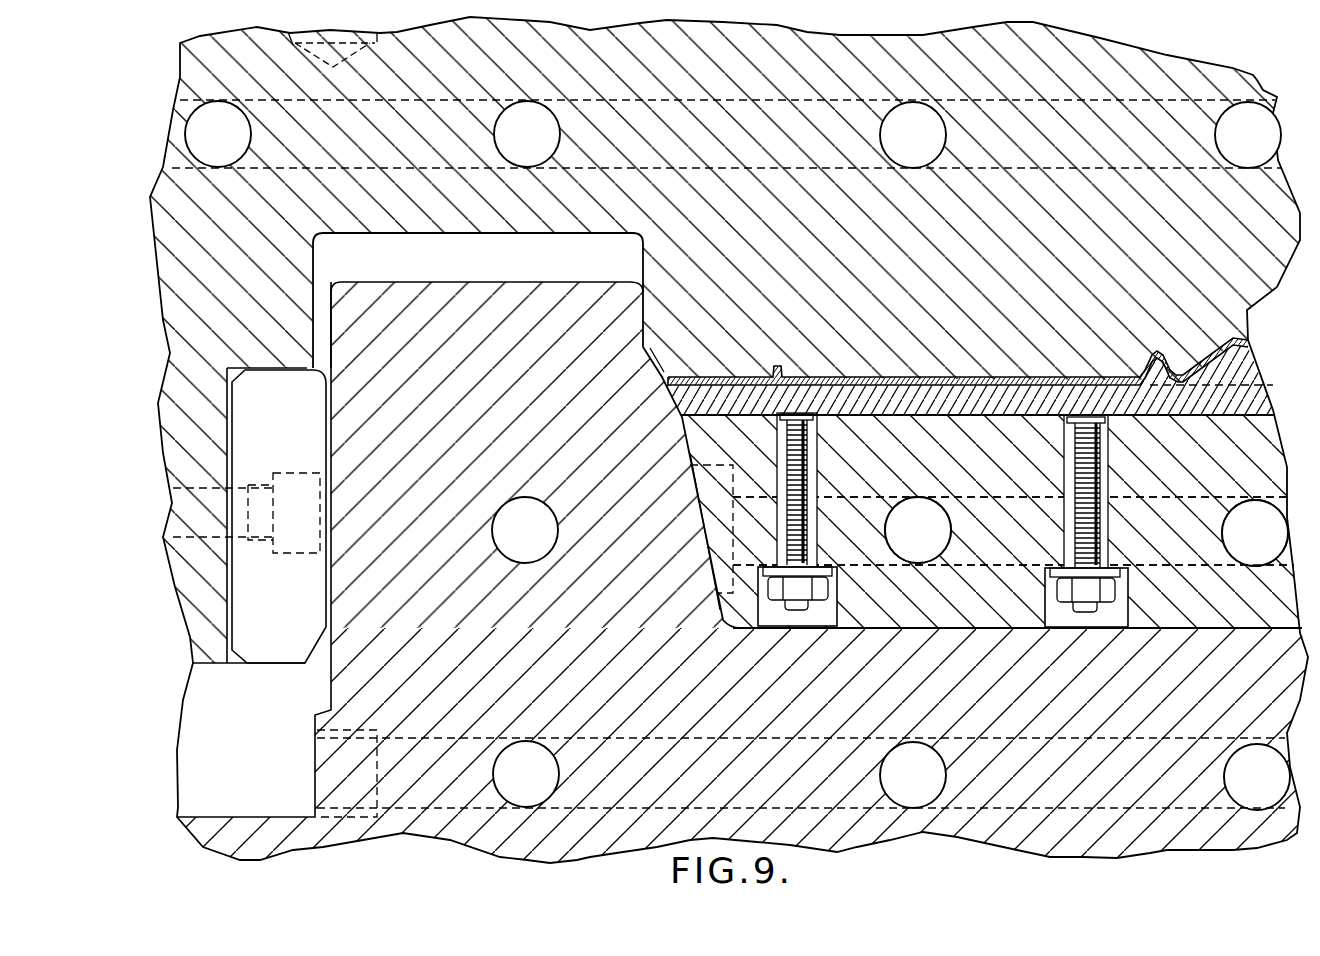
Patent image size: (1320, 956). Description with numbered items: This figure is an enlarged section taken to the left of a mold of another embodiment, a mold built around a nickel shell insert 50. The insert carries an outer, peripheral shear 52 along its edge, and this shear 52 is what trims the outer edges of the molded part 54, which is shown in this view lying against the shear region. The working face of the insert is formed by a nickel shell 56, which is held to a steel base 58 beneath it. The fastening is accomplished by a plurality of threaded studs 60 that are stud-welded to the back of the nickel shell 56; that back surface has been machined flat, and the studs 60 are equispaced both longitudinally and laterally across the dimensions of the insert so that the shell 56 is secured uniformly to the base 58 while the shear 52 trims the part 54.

The nickel shell insert 50 is at (1167, 627).
The outer peripheral shear 52 is at (643, 312).
The molded part 54 is at (807, 377).
The nickel shell 56 is at (943, 407).
The steel base 58 is at (891, 477).
The threaded studs 60 is at (1100, 480).